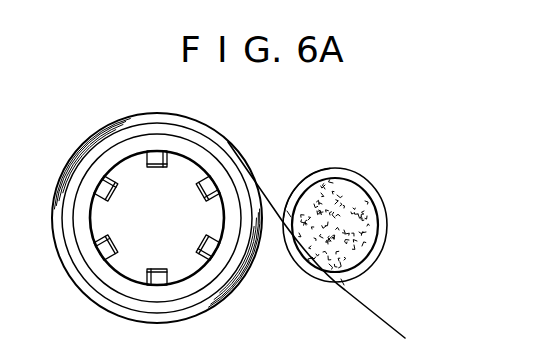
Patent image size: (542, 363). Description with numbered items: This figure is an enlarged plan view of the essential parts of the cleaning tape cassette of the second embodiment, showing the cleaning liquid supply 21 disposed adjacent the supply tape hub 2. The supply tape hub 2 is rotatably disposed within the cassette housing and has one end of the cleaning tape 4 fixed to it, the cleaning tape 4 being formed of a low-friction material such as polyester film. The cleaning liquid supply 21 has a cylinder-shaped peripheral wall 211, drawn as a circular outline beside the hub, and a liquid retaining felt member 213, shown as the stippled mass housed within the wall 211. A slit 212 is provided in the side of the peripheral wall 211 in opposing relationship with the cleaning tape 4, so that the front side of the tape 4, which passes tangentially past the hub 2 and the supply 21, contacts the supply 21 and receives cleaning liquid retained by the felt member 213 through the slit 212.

The supply tape hub 2 is at (202, 163).
The cleaning liquid supply 21 is at (268, 272).
The cylinder-shaped peripheral wall 211 is at (368, 190).
The slit 212 is at (309, 274).
The liquid retaining felt member 213 is at (357, 232).
The cleaning tape 4 is at (377, 315).